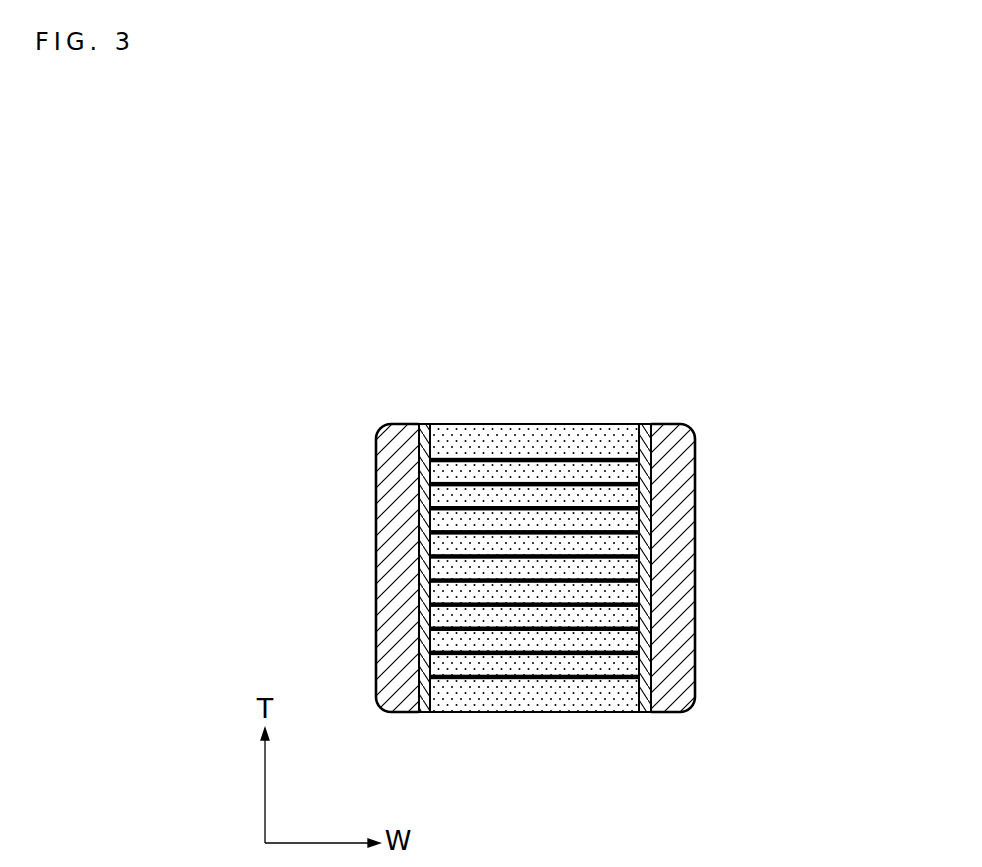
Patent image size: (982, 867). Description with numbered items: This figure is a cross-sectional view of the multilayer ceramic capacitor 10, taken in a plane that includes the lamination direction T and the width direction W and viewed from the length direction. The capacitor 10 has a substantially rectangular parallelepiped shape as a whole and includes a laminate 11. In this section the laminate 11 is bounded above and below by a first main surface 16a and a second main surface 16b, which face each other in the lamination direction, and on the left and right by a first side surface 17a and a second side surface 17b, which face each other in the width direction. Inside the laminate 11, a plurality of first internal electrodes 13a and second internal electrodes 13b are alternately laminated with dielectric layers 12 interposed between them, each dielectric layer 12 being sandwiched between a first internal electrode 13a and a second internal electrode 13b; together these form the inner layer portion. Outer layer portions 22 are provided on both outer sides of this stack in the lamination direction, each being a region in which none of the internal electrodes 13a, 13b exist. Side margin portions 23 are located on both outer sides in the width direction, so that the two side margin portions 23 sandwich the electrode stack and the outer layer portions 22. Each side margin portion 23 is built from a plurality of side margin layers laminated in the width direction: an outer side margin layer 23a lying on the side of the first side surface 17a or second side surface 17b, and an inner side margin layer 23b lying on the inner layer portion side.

The multilayer ceramic capacitor 10 is at (497, 253).
The laminate 11 is at (558, 424).
The dielectric layer 12 is at (618, 635).
The first internal electrode 13a is at (537, 555).
The second internal electrode 13b is at (487, 583).
The first main surface 16a is at (613, 424).
The second main surface 16b is at (517, 712).
The first side surface 17a is at (375, 540).
The second side surface 17b is at (695, 581).
The outer layer portion 22 is at (533, 440).
The side margin portion 23 is at (521, 471).
The outer side margin layer 23a is at (395, 422).
The inner side margin layer 23b is at (423, 422).